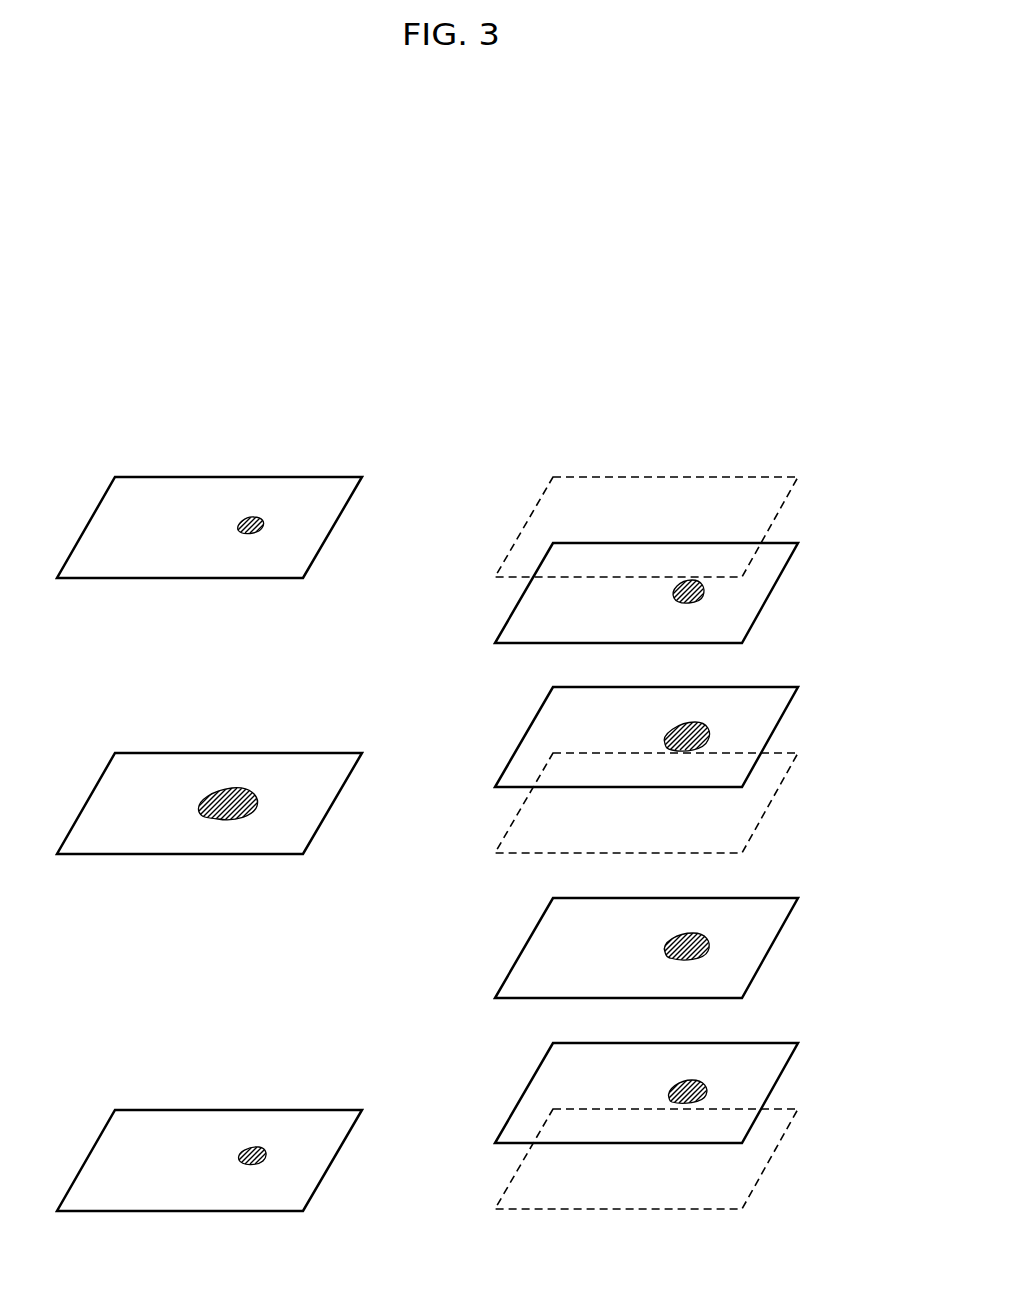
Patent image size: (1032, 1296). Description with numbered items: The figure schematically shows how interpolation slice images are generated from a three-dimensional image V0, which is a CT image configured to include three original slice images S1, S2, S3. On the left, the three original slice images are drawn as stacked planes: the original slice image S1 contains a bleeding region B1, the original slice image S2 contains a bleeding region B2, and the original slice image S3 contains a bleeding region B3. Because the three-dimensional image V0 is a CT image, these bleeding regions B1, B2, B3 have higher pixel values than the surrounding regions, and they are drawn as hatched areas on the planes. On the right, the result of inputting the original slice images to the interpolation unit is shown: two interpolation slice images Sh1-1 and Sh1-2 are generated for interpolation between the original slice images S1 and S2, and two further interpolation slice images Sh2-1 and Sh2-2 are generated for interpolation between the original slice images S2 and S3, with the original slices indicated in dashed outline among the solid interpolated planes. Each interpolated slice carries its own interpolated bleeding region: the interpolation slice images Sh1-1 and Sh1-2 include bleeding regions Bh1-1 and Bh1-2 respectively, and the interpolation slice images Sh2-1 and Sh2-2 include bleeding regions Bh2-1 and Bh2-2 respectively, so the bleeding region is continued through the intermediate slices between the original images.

The three-dimensional image V0 is at (160, 367).
The original slice image S1 is at (140, 476).
The original slice image S2 is at (140, 752).
The original slice image S3 is at (140, 1109).
The bleeding region B1 is at (257, 517).
The bleeding region B2 is at (235, 789).
The bleeding region B3 is at (257, 1147).
The interpolation slice image Sh1-1 is at (788, 542).
The interpolation slice image Sh1-2 is at (777, 687).
The bleeding region Bh1-1 is at (700, 595).
The bleeding region Bh1-2 is at (700, 722).
The interpolation slice image Sh2-1 is at (778, 898).
The interpolation slice image Sh2-2 is at (777, 1043).
The bleeding region Bh2-1 is at (697, 932).
The bleeding region Bh2-2 is at (695, 1081).